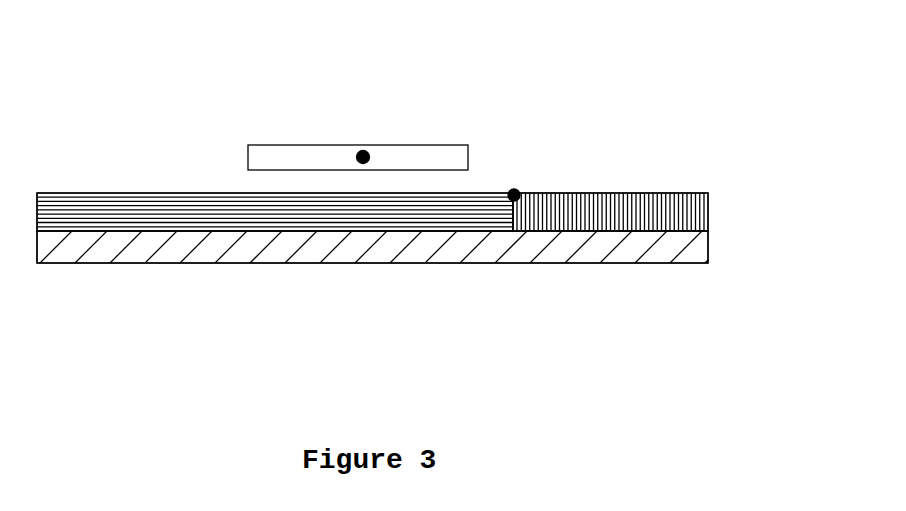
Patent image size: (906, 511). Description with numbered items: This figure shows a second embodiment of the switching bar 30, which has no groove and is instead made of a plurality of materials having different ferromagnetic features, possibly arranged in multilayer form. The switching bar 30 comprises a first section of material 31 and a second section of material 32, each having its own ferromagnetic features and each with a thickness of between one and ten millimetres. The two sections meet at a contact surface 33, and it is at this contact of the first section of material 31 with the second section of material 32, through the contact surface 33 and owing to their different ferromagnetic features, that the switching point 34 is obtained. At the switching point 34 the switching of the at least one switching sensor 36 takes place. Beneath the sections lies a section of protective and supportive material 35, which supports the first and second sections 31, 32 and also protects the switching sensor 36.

The switching bar 30 is at (403, 228).
The first section of material 31 is at (638, 205).
The second section of material 32 is at (130, 210).
The contact surface 33 is at (514, 198).
The switching point 34 is at (517, 188).
The section of protective and supportive material 35 is at (338, 240).
The switching sensor 36 is at (365, 146).